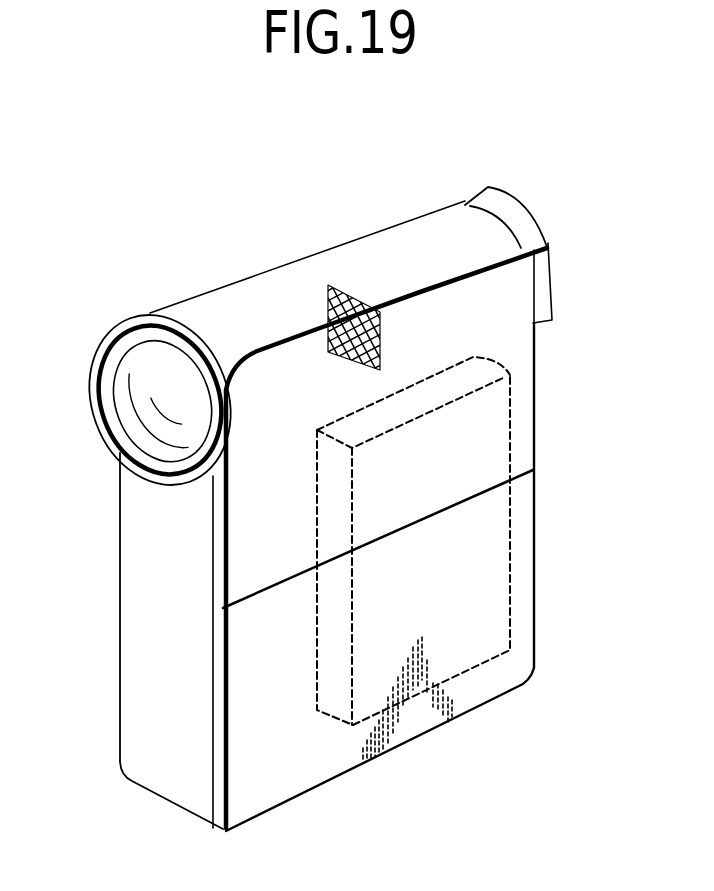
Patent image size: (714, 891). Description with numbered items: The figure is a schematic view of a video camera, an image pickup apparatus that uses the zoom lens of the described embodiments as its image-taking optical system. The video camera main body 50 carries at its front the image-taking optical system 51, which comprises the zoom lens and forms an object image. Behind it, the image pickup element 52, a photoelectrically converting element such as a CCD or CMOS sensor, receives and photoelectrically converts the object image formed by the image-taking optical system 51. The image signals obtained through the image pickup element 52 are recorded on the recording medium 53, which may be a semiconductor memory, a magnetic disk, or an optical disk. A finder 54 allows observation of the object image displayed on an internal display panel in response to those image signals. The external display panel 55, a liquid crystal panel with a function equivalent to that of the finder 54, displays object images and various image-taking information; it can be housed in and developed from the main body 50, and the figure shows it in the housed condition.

The main body 50 is at (127, 633).
The image-taking optical system 51 is at (143, 402).
The image pickup element 52 is at (348, 282).
The recording medium 53 is at (500, 556).
The finder 54 is at (528, 212).
The external display panel 55 is at (303, 772).